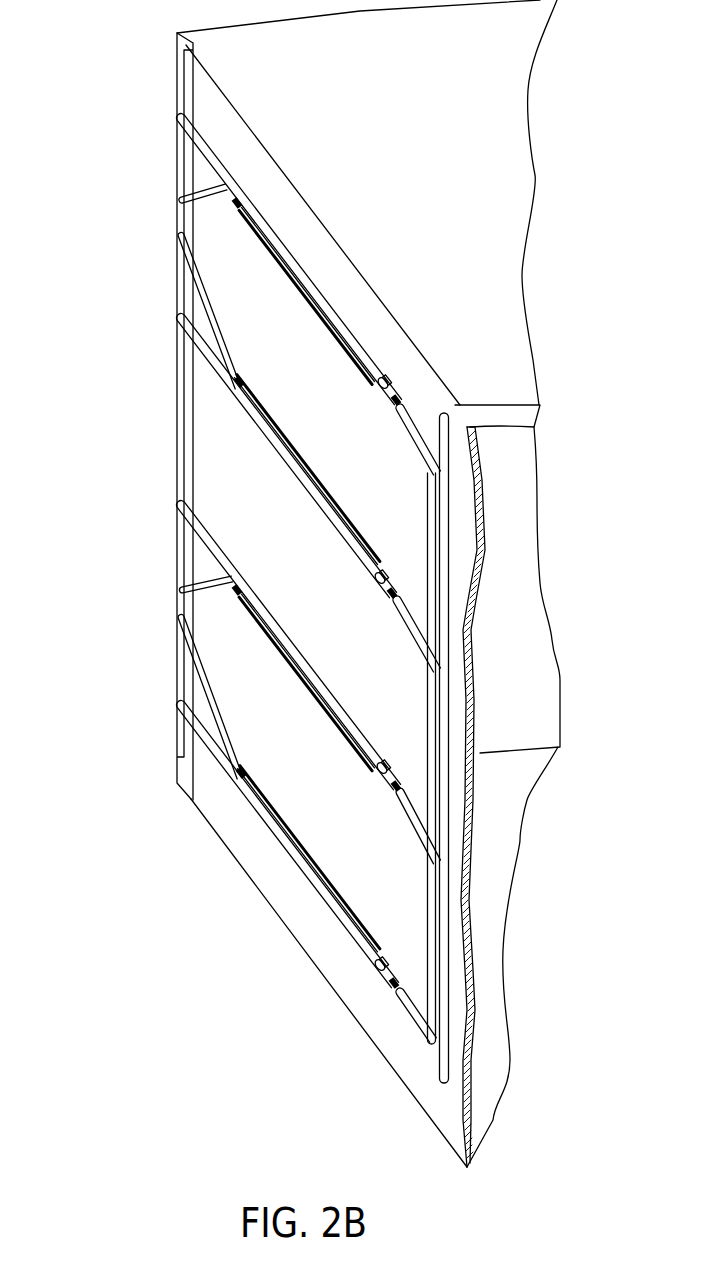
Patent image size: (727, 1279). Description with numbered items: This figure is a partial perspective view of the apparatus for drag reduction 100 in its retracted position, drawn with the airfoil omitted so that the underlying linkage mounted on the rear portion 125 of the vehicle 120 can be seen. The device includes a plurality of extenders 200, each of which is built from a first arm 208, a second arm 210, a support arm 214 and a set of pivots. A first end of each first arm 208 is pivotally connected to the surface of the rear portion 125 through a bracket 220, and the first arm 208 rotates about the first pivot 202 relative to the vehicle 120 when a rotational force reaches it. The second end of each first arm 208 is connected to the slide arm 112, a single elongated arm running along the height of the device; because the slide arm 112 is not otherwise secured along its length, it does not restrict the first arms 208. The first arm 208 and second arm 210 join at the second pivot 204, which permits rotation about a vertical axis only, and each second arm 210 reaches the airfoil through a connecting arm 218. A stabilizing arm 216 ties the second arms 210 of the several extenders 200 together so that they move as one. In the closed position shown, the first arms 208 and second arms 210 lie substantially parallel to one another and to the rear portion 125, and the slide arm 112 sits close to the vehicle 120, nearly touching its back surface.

The apparatus for drag reduction 100 is at (97, 83).
The slide arm 112 is at (180, 218).
The vehicle 120 is at (312, 209).
The rear portion 125 is at (355, 425).
The extender 200 is at (344, 956).
The first pivot 202 is at (390, 378).
The second pivot 204 is at (242, 210).
The first arm 208 is at (366, 350).
The second arm 210 is at (323, 328).
The support arm 214 is at (193, 190).
The stabilizing arm 216 is at (433, 508).
The connecting arm 218 is at (443, 730).
The bracket 220 is at (405, 404).